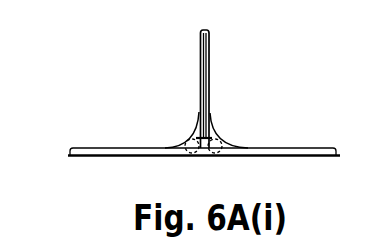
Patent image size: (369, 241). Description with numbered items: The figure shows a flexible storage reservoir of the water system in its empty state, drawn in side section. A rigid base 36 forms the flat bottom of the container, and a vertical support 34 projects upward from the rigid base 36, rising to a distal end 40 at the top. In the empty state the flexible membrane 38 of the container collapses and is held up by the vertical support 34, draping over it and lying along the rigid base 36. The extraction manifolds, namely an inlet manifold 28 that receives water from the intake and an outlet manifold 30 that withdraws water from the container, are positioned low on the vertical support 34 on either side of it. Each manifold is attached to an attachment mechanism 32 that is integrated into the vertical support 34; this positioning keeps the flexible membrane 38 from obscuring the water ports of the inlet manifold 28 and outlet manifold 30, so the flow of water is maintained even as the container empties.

The inlet manifold 28 is at (192, 157).
The outlet manifold 30 is at (217, 156).
The attachment mechanism 32 is at (198, 138).
The vertical support 34 is at (208, 123).
The rigid base 36 is at (103, 157).
The flexible membrane 38 is at (177, 147).
The distal end 40 is at (209, 31).